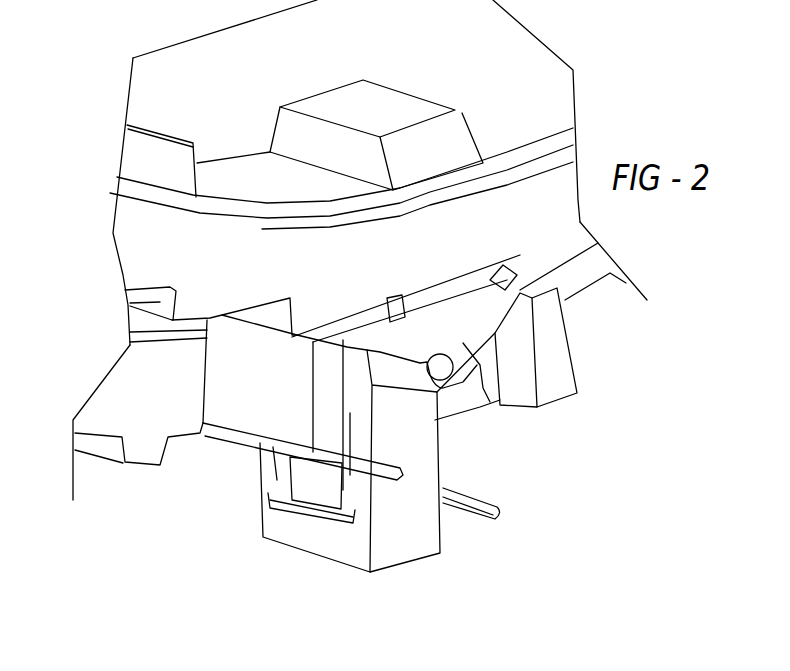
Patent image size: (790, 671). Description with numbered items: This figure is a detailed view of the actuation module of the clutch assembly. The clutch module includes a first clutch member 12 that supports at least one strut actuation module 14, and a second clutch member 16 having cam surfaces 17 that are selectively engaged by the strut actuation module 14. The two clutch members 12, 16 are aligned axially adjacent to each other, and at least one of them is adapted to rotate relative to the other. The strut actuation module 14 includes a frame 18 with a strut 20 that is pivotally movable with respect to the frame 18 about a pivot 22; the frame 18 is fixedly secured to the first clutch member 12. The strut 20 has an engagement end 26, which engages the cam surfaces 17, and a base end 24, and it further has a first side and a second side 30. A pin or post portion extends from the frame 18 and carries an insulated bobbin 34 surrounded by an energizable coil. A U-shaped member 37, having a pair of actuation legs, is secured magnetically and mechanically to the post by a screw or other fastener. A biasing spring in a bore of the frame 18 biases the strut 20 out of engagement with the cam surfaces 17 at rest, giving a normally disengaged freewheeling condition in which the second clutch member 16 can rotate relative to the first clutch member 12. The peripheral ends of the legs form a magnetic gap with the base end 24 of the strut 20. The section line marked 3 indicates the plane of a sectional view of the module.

The section line 3- 3 is at (397, 80).
The first clutch member 12 is at (567, 318).
The strut actuation module 14 is at (495, 470).
The second clutch member 16 is at (263, 242).
The cam surfaces 17 is at (128, 308).
The frame 18 is at (550, 358).
The strut 20 is at (462, 325).
The pivot 22 is at (390, 300).
The base end 24 is at (373, 360).
The engagement end 26 is at (503, 278).
The second side 30 is at (482, 400).
The insulated bobbin 34 is at (300, 505).
The U-shaped member 37 is at (420, 535).